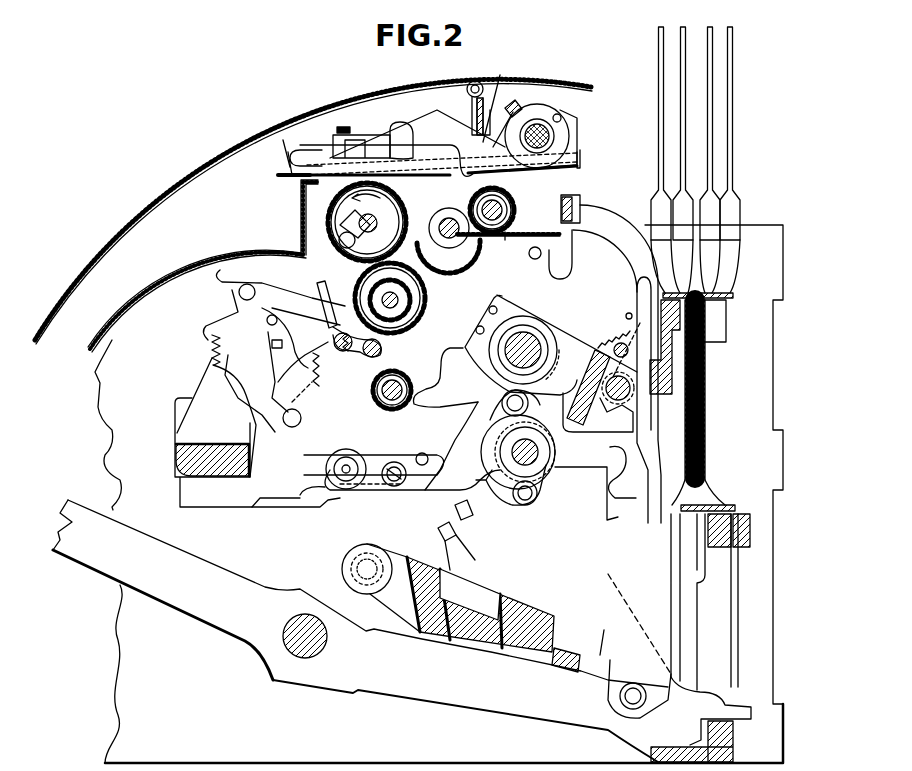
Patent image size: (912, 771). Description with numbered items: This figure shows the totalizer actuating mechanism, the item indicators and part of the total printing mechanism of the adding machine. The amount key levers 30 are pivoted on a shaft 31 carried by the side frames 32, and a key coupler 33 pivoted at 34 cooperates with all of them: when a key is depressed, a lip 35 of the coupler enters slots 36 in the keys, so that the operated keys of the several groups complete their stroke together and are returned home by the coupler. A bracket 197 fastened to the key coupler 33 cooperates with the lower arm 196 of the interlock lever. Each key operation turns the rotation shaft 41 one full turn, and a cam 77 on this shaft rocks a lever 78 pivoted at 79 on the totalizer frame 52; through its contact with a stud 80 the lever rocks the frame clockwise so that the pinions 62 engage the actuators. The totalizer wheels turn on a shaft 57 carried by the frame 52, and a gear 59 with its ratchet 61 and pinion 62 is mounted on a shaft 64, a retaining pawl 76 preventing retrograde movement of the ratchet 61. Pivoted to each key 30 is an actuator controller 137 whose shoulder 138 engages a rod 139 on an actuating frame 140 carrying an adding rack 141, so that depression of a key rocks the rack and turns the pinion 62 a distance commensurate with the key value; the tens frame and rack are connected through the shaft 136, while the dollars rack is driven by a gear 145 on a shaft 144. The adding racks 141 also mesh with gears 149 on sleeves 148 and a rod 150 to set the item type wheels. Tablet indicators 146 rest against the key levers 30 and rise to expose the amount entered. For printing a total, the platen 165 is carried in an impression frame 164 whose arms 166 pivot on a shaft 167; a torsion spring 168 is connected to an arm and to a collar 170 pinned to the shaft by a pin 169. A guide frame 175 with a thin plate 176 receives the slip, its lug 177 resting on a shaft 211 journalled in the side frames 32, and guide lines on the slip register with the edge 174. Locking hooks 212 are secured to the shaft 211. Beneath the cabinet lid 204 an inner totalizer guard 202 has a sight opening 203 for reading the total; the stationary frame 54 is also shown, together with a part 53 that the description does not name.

The amount key levers 30 is at (216, 618).
The shaft 31 is at (288, 656).
The side frames 32 is at (122, 684).
The key coupler 33 is at (522, 606).
The pivot 34 is at (367, 555).
The lip 35 is at (575, 655).
The slots 36 is at (604, 652).
The rotation shaft 41 is at (540, 453).
The totalizer frame 52 is at (340, 442).
The lever 53 is at (338, 488).
The stationary frame 54 is at (280, 496).
The shaft 57 is at (365, 228).
The gear 59 is at (453, 260).
The ratchet 61 is at (420, 290).
The pinion 62 is at (408, 312).
The shaft 64 is at (400, 302).
The retaining pawl 76 is at (328, 322).
The cam 77 is at (500, 480).
The lever 78 is at (462, 430).
The pivot 79 is at (400, 484).
The stud 80 is at (301, 416).
The shaft 136 is at (530, 332).
The actuator controller 137 is at (612, 540).
The shoulder 138 is at (612, 485).
The rod 139 is at (601, 377).
The actuating frame 140 is at (594, 338).
The adding rack 141 is at (520, 230).
The shaft 144 is at (512, 205).
The gear 145 is at (505, 192).
The tablet indicators 146 is at (660, 52).
The concentric sleeves 148 is at (394, 408).
The gears 149 is at (405, 383).
The rod 150 is at (425, 390).
The impression frame 164 is at (440, 108).
The platen 165 is at (378, 150).
The arms 166 is at (487, 130).
The shaft 167 is at (564, 128).
The torsion spring 168 is at (500, 75).
The pin 169 is at (510, 105).
The collar 170 is at (555, 112).
The edge 174 is at (282, 128).
The frame 175 is at (297, 160).
The thin plate 176 is at (290, 167).
The lug 177 is at (466, 150).
The lower arm 196 is at (468, 515).
The bracket 197 is at (438, 528).
The inner cabinet totalizer guard 202 is at (275, 257).
The sight opening 203 is at (300, 212).
The cabinet lid 204 is at (208, 160).
The shaft 211 is at (514, 243).
The locking hooks 212 is at (455, 258).